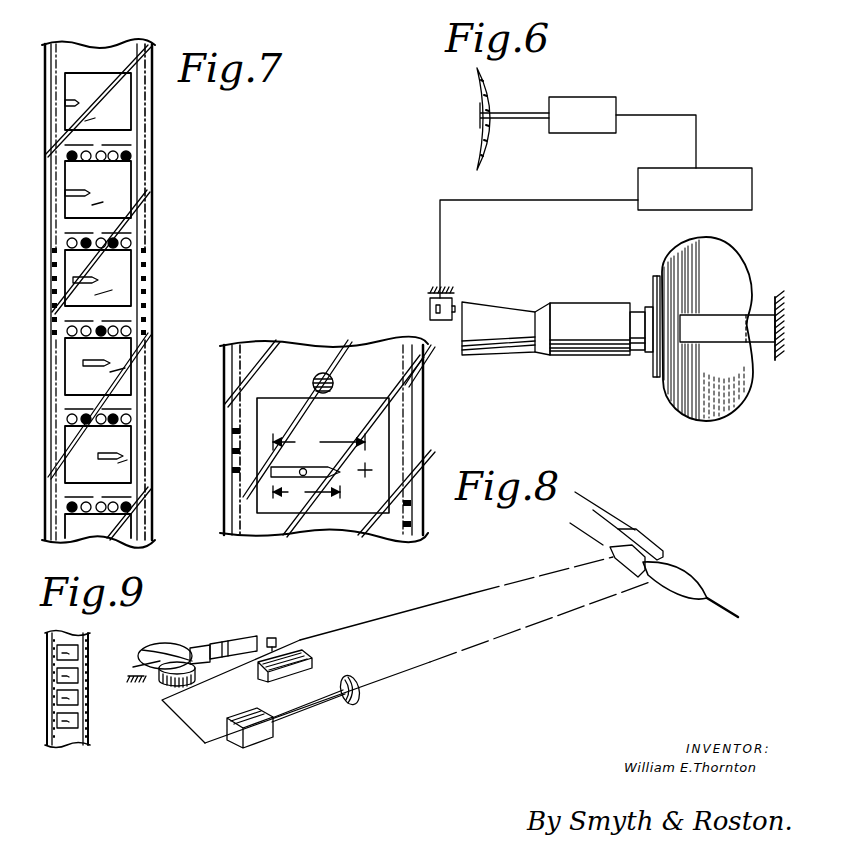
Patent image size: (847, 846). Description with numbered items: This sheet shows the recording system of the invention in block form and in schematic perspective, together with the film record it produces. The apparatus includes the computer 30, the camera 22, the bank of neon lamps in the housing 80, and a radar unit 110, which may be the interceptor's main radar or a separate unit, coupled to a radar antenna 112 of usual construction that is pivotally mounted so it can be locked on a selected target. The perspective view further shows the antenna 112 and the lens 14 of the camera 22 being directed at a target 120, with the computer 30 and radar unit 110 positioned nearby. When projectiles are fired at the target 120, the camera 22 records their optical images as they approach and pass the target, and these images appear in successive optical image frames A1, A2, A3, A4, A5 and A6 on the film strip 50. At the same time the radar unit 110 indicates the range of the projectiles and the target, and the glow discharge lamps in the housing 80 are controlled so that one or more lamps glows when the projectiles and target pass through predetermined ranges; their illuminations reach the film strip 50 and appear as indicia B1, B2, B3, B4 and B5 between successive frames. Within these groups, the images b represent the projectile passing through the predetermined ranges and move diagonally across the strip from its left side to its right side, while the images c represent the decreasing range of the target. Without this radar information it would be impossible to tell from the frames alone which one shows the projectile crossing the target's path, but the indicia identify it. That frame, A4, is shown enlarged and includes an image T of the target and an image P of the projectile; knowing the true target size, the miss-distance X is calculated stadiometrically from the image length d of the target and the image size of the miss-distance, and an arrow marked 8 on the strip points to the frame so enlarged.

In FIG. 7, the film strip 50 is at (153, 105).
In FIG. 9, the film strip 50 is at (93, 637).
In FIG. 7, the enlarged frame view of FIG. 8 is at (158, 357).
In FIG. 7, the optical image frame A1 is at (62, 118).
In FIG. 7, the optical image frame A2 is at (62, 206).
In FIG. 7, the optical image frame A3 is at (62, 294).
In FIG. 7, the optical image frame A4 is at (62, 382).
In FIG. 8, the optical image frame A4 is at (378, 430).
In FIG. 7, the optical image frame A5 is at (62, 470).
In FIG. 7, the optical image frame A6 is at (62, 526).
In FIG. 7, the range indicia B1 is at (100, 141).
In FIG. 7, the range indicia B2 is at (100, 229).
In FIG. 7, the range indicia B3 is at (100, 317).
In FIG. 7, the range indicia B4 is at (100, 405).
In FIG. 7, the range indicia B5 is at (100, 493).
In FIG. 7, the projectile range image b is at (71, 161).
In FIG. 8, the projectile range image b is at (323, 393).
In FIG. 7, the target range image c is at (126, 161).
In FIG. 8, the target range image c is at (330, 375).
In FIG. 8, the miss-distance X is at (319, 442).
In FIG. 8, the image length of the target d is at (306, 493).
In FIG. 8, the image of the projectile P is at (369, 462).
In FIG. 8, the image of the target T is at (337, 473).
In FIG. 6, the radar unit 110 is at (618, 101).
In FIG. 9, the radar unit 110 is at (258, 740).
In FIG. 6, the computer 30 is at (730, 172).
In FIG. 9, the computer 30 is at (290, 674).
In FIG. 6, the radar antenna 112 is at (440, 153).
In FIG. 9, the radar antenna 112 is at (360, 702).
In FIG. 6, the housing 80 is at (452, 300).
In FIG. 9, the housing 80 is at (273, 637).
In FIG. 6, the camera 22 is at (598, 363).
In FIG. 9, the camera 22 is at (168, 637).
In FIG. 9, the lens 14 is at (242, 657).
In FIG. 9, the target 120 is at (670, 556).